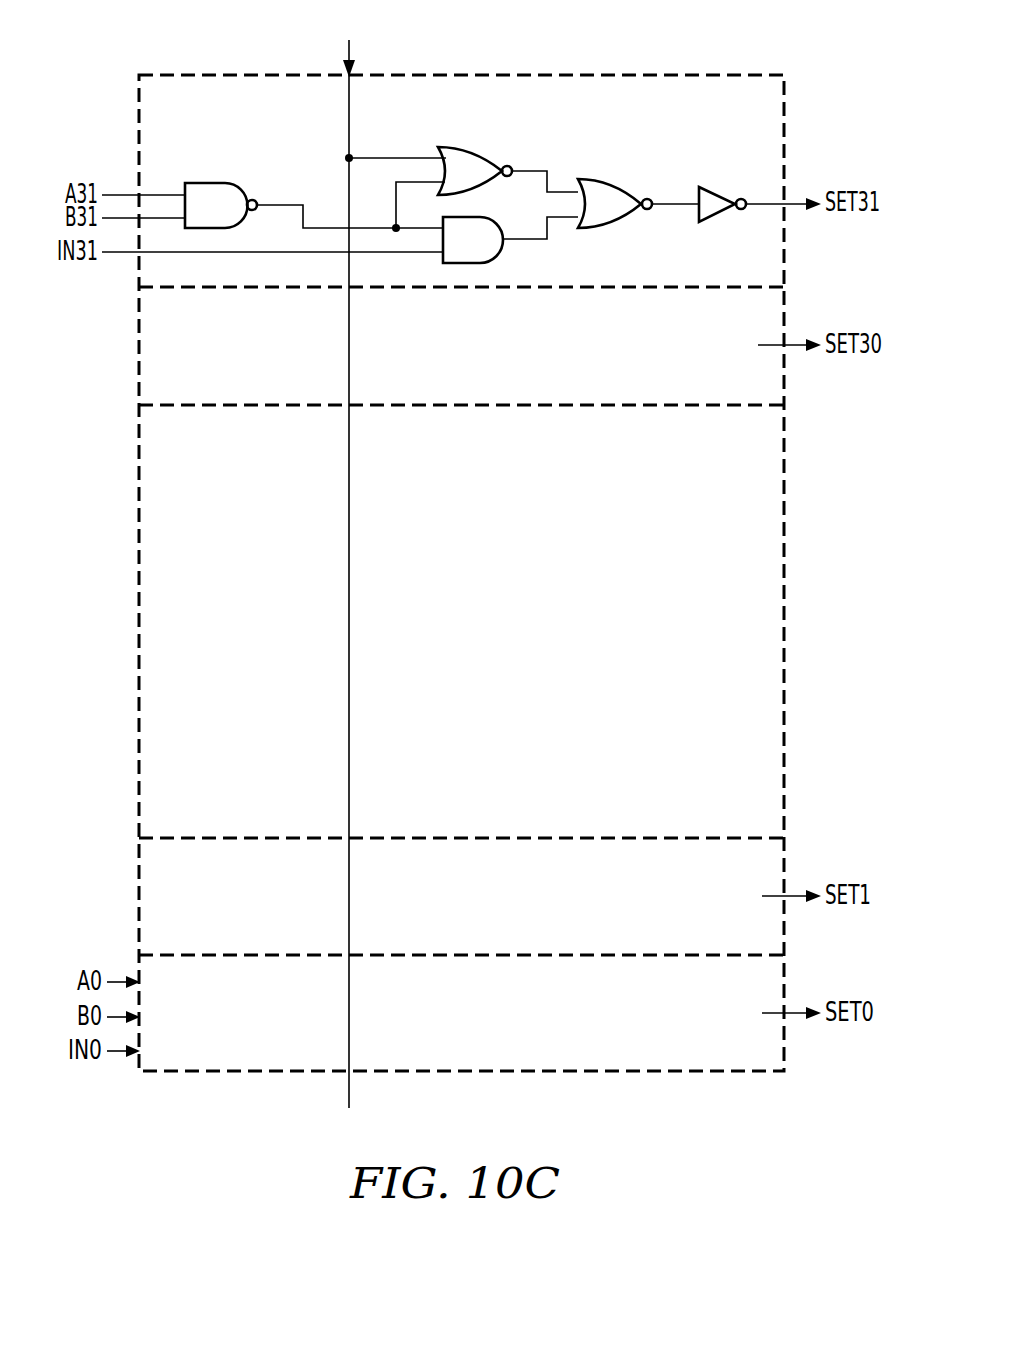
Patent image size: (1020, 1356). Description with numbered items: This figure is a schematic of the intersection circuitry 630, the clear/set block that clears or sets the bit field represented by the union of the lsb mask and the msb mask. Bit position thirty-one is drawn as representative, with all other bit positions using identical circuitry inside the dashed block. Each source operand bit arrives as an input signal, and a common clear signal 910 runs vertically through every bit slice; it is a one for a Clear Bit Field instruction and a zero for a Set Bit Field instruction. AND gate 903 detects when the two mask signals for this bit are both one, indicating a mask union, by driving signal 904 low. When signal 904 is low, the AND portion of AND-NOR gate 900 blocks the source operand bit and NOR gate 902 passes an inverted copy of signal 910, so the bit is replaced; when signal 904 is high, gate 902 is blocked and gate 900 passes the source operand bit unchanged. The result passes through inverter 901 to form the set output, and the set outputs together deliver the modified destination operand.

The intersection circuitry 630 is at (138, 582).
The signal 910 is at (350, 582).
The AND gate 903 is at (212, 183).
The signal 904 is at (277, 205).
The NOR gate 902 is at (462, 146).
The AND-NOR gate 900 is at (600, 178).
The inverter 901 is at (720, 187).